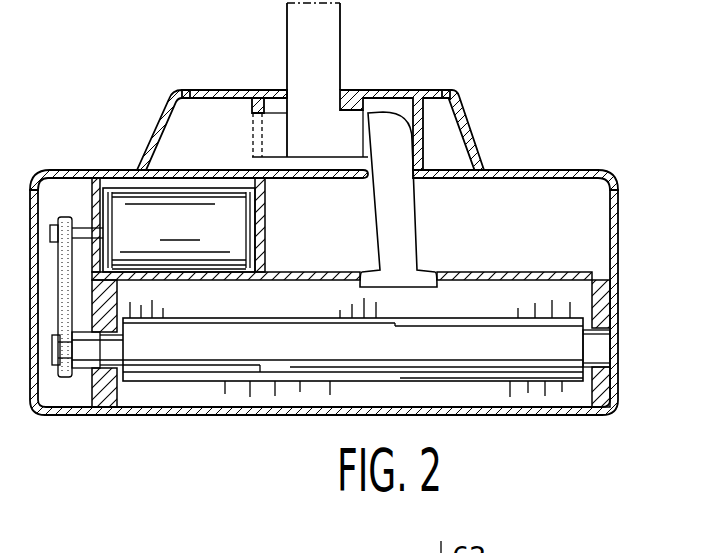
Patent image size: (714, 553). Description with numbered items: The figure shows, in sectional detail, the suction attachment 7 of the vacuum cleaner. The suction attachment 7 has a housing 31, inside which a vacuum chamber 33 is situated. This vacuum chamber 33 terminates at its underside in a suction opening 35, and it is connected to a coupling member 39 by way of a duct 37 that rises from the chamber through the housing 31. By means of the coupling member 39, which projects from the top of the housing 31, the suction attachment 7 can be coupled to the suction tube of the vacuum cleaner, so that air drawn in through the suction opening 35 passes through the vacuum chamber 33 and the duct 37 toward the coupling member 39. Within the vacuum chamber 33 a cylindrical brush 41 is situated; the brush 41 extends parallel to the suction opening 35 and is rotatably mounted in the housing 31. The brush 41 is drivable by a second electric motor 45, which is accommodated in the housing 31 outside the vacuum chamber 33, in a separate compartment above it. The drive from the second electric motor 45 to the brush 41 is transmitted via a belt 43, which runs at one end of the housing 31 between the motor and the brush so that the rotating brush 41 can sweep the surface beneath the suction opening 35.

The suction attachment 7 is at (592, 150).
The housing 31 is at (618, 233).
The vacuum chamber 33 is at (487, 296).
The suction opening 35 is at (481, 411).
The duct 37 is at (384, 122).
The coupling member 39 is at (328, 42).
The cylindrical brush 41 is at (203, 388).
The belt 43 is at (70, 383).
The second electric motor 45 is at (135, 165).